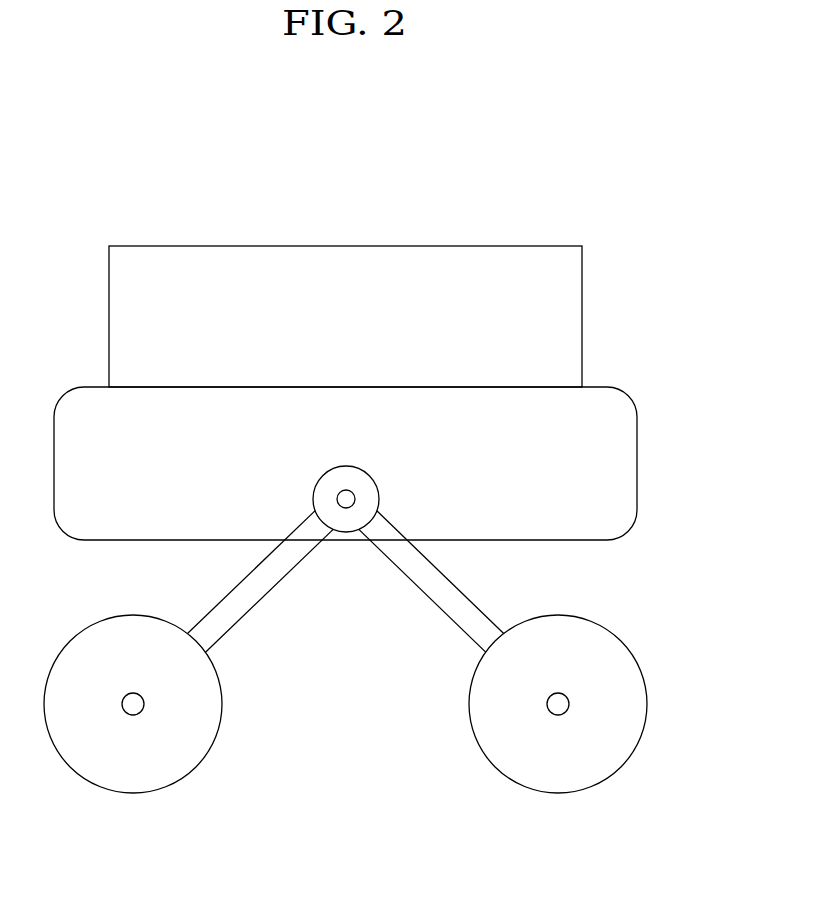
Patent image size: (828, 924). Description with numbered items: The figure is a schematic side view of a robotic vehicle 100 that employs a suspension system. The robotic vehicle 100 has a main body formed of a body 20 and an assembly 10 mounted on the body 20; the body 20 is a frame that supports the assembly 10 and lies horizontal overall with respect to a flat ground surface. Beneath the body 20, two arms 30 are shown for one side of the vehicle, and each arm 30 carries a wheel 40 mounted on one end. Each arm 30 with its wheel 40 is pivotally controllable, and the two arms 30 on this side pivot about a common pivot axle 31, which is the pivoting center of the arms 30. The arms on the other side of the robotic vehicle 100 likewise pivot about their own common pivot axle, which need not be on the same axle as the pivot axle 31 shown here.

The robotic vehicle 100 is at (363, 852).
The assembly 10 is at (560, 318).
The body 20 is at (610, 466).
The arm 30 is at (466, 602).
The pivot axle 31 is at (346, 503).
The wheel 40 is at (627, 703).